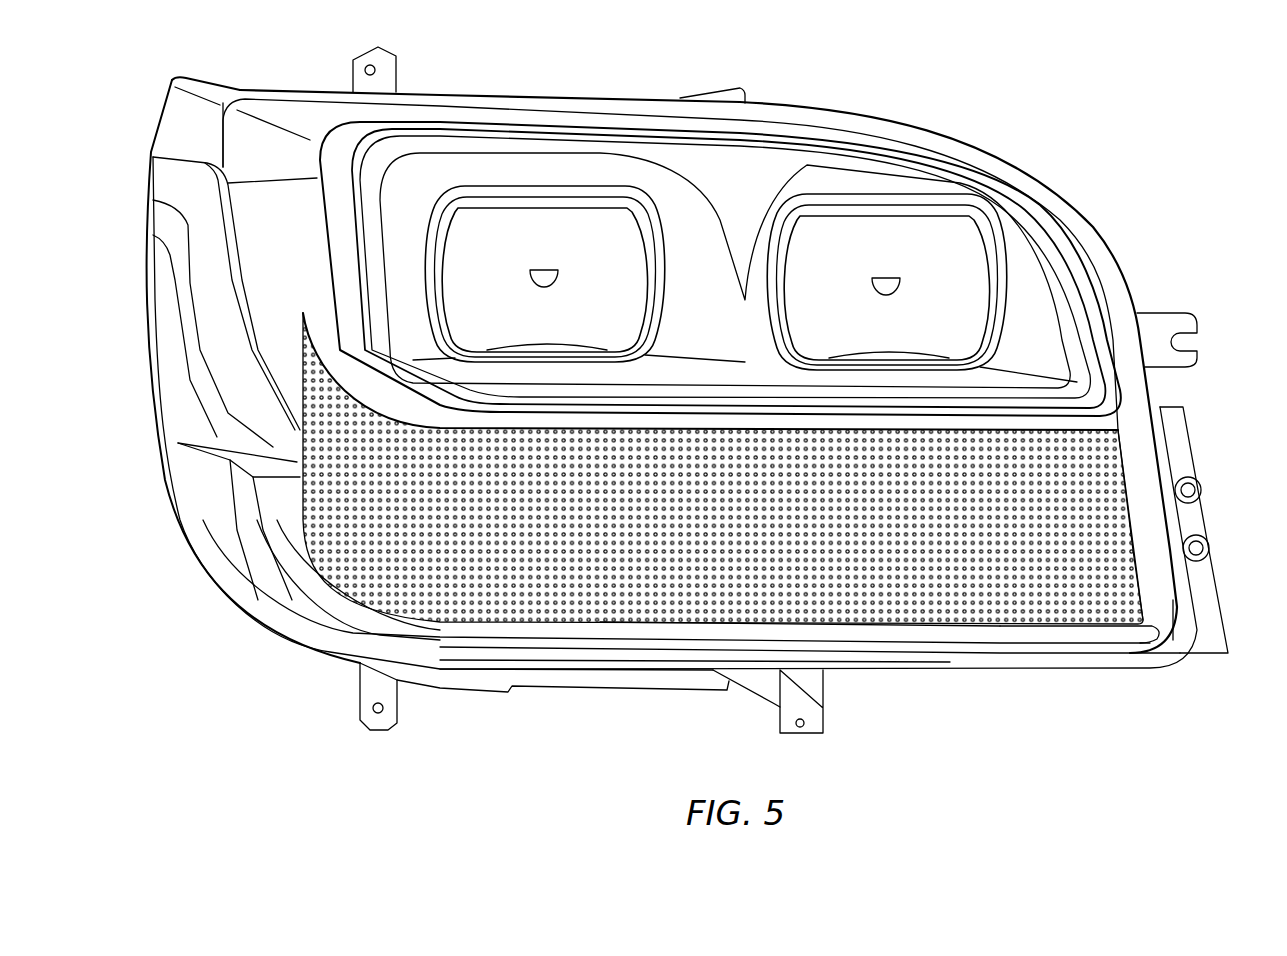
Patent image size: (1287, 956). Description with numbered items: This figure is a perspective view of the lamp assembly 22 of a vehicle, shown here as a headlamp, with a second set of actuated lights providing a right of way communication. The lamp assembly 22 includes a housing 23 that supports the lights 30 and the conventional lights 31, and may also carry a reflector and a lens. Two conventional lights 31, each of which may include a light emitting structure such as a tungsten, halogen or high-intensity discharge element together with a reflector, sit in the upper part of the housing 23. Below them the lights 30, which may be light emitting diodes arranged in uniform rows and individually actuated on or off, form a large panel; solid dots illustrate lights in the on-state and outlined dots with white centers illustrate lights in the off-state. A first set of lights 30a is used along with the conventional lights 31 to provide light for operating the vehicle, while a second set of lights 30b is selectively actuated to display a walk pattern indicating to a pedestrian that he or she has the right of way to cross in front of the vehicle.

The lamp assembly 22 is at (1020, 94).
The housing 23 is at (1097, 227).
The lights 30 is at (1117, 467).
The first set of lights 30a is at (1023, 577).
The second set of lights 30b is at (698, 588).
The conventional light 31 is at (529, 240).